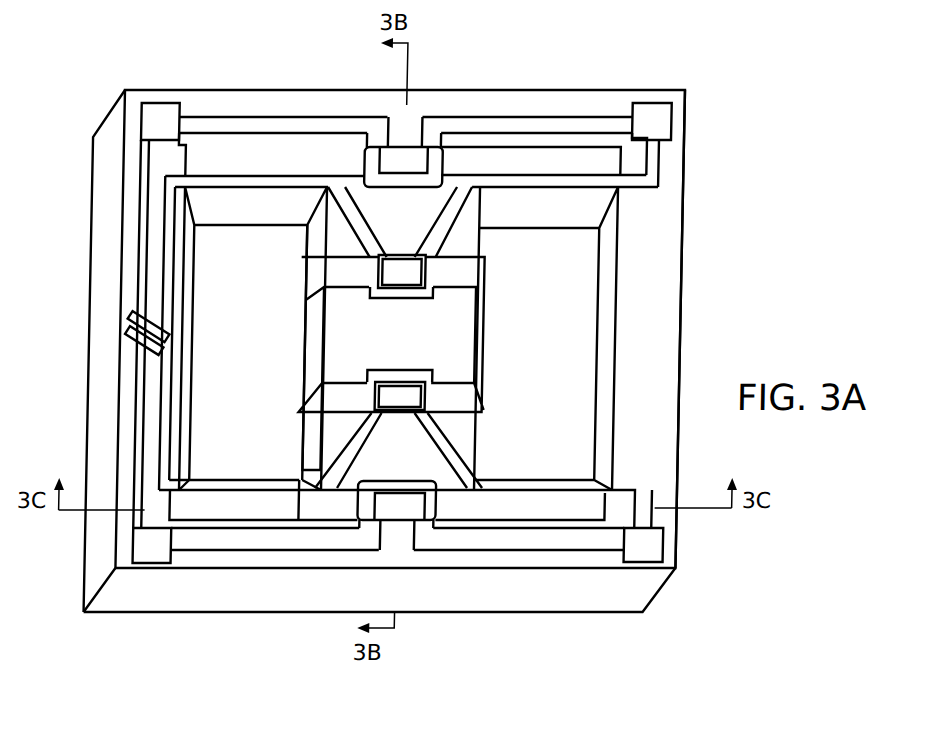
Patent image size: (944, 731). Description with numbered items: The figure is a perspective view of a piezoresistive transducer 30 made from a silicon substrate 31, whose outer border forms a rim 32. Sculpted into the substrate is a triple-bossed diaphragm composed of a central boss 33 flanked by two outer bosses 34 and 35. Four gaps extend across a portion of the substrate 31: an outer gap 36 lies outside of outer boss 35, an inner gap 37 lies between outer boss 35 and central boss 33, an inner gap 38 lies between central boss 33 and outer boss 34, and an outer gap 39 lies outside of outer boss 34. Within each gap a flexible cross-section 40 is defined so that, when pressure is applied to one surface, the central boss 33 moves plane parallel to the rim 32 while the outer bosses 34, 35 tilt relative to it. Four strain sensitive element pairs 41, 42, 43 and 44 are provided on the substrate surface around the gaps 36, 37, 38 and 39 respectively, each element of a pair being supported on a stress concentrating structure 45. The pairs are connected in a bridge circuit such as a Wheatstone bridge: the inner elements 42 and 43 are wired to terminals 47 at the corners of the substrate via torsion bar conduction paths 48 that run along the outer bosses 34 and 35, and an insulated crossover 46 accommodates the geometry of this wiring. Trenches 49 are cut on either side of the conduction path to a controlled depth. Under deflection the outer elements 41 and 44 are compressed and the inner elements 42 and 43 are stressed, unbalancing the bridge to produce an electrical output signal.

The transducer 30 is at (268, 87).
The silicon substrate 31 is at (289, 600).
The rim 32 is at (657, 313).
The central boss 33 is at (480, 344).
The outer boss 34 is at (474, 220).
The outer boss 35 is at (479, 428).
The outer gap 36 is at (398, 508).
The inner gap 37 is at (402, 397).
The inner gap 38 is at (402, 265).
The outer gap 39 is at (406, 182).
The flexible cross-section 40 is at (309, 297).
The strain sensitive element pair 41 is at (418, 527).
The strain sensitive element pair 42 is at (426, 374).
The strain sensitive element pair 43 is at (386, 275).
The strain sensitive element pair 44 is at (425, 170).
The stress concentrating structure 45 is at (428, 156).
The insulated crossover 46 is at (134, 329).
The terminal 47 is at (158, 113).
The torsion bar conduction path 48 is at (168, 184).
The trench 49 is at (235, 250).